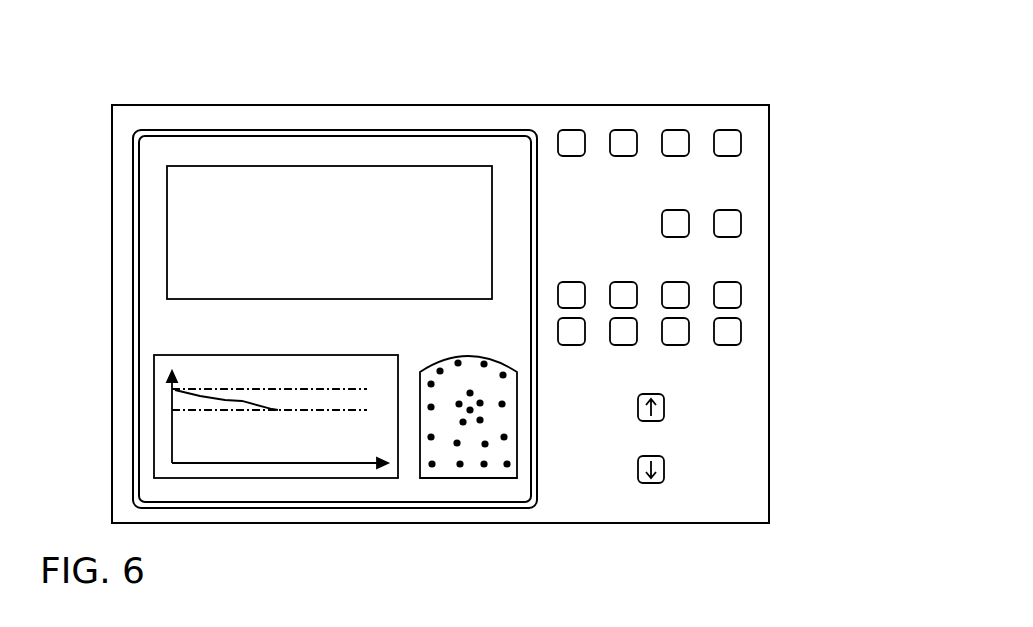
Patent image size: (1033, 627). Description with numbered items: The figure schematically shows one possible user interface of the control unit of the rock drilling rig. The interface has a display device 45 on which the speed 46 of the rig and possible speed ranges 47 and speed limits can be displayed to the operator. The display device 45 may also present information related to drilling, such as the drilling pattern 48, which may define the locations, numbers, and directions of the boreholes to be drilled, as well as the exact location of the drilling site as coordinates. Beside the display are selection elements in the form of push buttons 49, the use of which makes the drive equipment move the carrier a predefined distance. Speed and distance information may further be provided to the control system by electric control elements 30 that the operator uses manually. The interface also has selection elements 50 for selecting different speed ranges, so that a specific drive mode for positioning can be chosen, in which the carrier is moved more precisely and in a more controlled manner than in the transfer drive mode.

The electric control elements 30 is at (738, 452).
The display device 45 is at (160, 320).
The speed 46 is at (177, 205).
The speed ranges 47 is at (187, 403).
The drilling pattern 48 is at (472, 463).
The push buttons 49 is at (775, 142).
The selection elements 50 is at (755, 222).